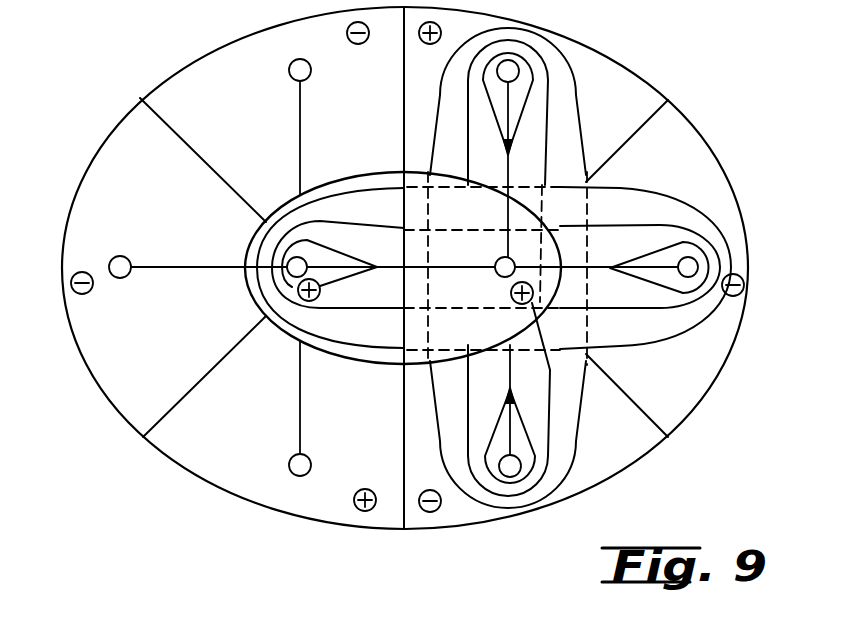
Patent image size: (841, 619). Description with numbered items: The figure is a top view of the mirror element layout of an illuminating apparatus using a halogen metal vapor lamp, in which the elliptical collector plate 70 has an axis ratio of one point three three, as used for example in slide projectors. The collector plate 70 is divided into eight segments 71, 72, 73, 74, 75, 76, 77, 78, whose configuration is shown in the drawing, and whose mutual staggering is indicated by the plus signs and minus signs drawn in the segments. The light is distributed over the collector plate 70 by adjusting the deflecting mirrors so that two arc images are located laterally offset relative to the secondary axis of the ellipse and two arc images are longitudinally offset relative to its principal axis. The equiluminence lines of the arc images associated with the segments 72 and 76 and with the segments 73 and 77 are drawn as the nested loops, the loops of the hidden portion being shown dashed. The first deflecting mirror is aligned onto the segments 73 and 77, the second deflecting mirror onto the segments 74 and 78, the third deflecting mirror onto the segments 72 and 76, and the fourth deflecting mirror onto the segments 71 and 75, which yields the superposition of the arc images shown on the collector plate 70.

The collector plate 70 is at (644, 77).
The segment 71 is at (231, 478).
The segment 72 is at (595, 65).
The segment 73 is at (378, 188).
The segment 74 is at (509, 326).
The segment 75 is at (213, 72).
The segment 76 is at (592, 472).
The segment 77 is at (690, 170).
The segment 78 is at (103, 365).